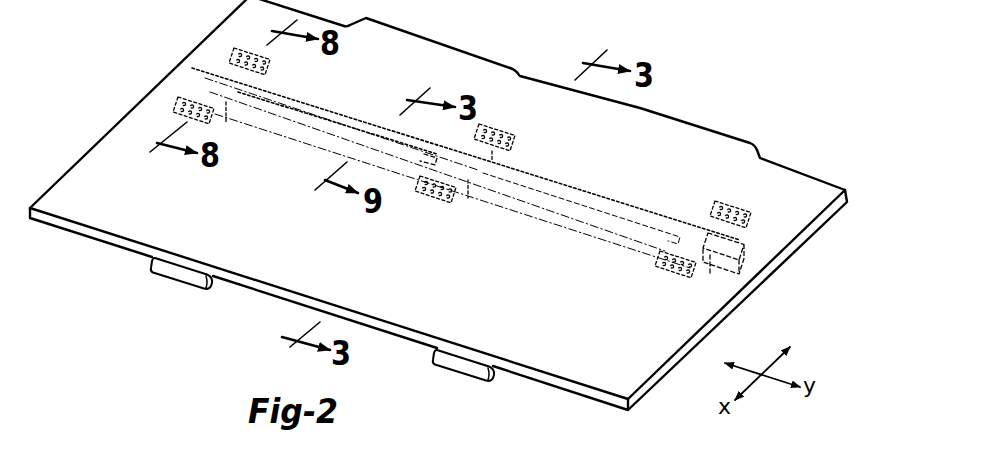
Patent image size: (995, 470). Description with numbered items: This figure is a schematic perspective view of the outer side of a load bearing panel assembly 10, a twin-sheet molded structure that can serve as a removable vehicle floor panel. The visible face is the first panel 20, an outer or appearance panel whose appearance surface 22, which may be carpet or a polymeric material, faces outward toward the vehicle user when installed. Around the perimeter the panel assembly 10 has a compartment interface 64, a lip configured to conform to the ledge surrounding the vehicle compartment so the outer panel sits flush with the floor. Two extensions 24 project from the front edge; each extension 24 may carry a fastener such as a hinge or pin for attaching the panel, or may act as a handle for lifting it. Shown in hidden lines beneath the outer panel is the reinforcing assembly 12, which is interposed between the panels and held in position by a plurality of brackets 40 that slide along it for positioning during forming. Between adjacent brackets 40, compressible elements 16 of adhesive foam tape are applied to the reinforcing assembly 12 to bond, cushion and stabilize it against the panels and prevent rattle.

The load bearing panel assembly 10 is at (124, 48).
The reinforcing assembly 12 is at (286, 153).
The compressible element 16 is at (337, 120).
The first panel 20 is at (92, 140).
The appearance surface 22 is at (128, 221).
The extension 24 is at (173, 284).
The bracket 40 is at (258, 63).
The compartment interface 64 is at (695, 122).